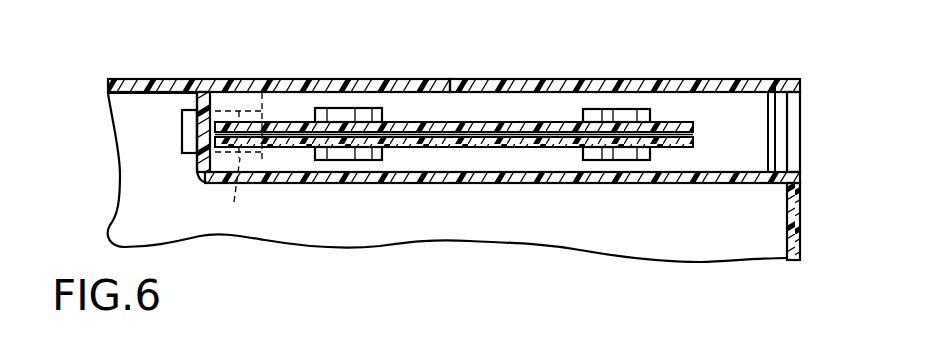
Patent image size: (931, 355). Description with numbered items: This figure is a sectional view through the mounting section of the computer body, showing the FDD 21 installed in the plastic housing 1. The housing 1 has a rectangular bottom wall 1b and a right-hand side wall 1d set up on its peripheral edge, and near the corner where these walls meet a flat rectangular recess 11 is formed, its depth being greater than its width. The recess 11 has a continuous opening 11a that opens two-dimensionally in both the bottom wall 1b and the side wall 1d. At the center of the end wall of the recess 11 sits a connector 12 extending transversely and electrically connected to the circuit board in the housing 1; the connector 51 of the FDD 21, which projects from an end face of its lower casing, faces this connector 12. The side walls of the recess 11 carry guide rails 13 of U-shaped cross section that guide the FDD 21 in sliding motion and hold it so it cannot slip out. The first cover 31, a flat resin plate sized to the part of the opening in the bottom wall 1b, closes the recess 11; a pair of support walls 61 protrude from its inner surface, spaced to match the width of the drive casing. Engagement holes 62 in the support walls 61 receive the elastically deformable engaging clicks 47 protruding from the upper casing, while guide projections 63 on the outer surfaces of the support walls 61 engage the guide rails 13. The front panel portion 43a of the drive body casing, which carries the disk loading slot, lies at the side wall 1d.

The housing 1 is at (142, 207).
The bottom wall 1b is at (134, 78).
The right-hand side wall 1d is at (787, 214).
The recess 11 is at (224, 88).
The opening 11a is at (247, 100).
The connector 12 is at (182, 133).
The guide rail 13 is at (415, 150).
The FDD 21 is at (458, 106).
The first cover 31 is at (537, 79).
The front panel portion 43a is at (794, 135).
The engaging click 47 is at (341, 110).
The connector 51 is at (234, 193).
The support wall 61 is at (727, 110).
The engagement hole 62 is at (373, 110).
The guide projection 63 is at (277, 132).